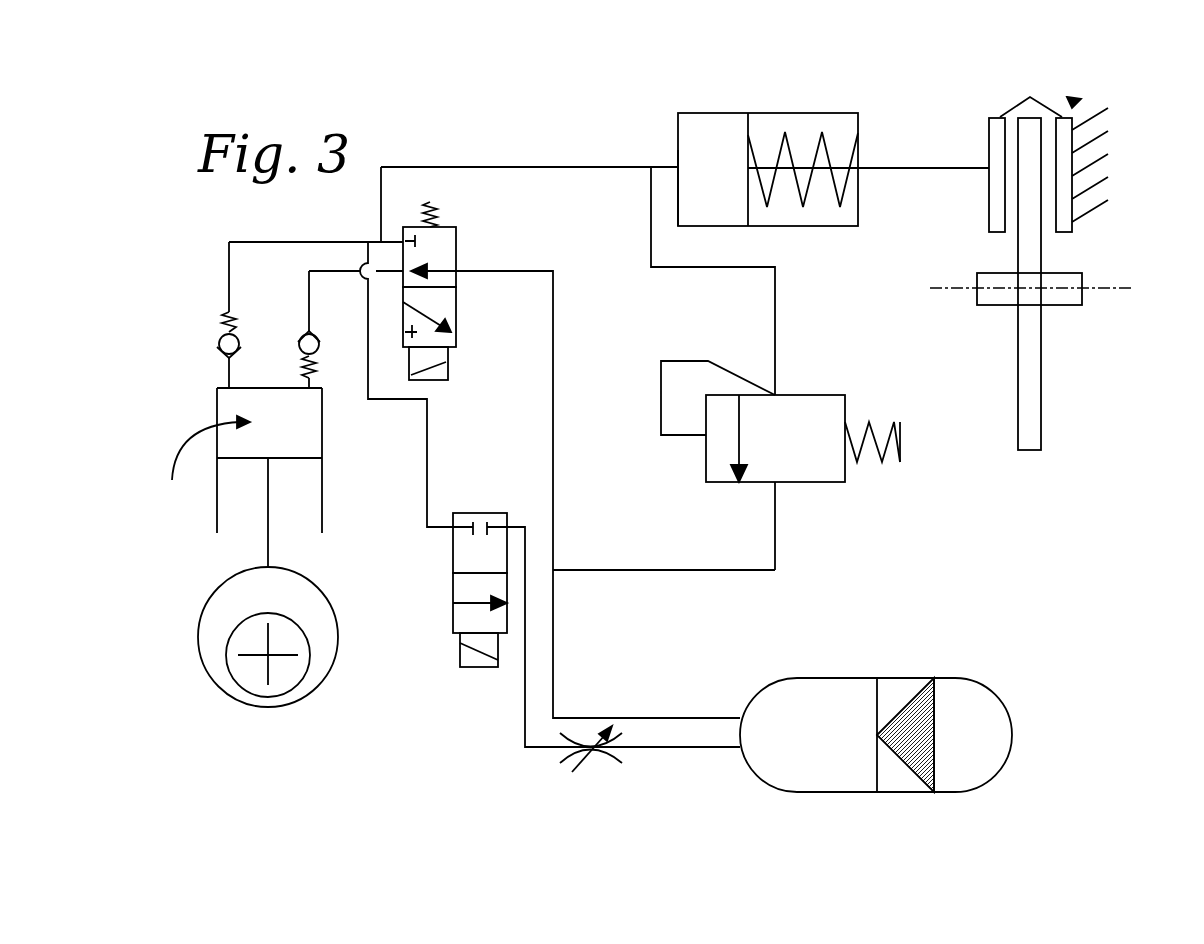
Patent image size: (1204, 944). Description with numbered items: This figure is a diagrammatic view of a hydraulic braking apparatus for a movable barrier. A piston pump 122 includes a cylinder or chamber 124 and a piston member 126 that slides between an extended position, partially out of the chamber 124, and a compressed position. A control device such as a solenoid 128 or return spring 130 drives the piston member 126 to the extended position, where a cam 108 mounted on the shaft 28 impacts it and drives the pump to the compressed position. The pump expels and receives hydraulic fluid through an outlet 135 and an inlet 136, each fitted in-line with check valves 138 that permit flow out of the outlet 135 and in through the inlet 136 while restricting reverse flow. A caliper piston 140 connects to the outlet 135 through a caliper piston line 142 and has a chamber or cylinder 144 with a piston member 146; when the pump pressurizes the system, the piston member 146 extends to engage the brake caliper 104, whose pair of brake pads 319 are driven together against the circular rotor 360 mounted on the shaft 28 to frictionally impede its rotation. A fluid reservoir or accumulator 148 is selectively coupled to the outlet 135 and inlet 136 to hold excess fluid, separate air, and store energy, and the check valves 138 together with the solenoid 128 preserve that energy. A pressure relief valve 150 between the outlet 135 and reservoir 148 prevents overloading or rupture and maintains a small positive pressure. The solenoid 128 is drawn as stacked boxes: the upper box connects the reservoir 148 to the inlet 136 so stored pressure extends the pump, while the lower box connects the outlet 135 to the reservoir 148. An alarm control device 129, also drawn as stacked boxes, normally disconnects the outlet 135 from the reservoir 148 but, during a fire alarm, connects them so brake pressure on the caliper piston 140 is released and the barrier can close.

The shaft 28 is at (270, 655).
The brake caliper 104 is at (1081, 99).
The cam 108 is at (340, 625).
The piston pump 122 is at (322, 495).
The cylinder or chamber 124 is at (201, 461).
The piston member 126 is at (250, 458).
The solenoid 128 is at (456, 245).
The alarm control device 129 is at (473, 513).
The return spring 130 is at (432, 207).
The outlet 135 is at (228, 387).
The inlet 136 is at (312, 381).
The check valves 138 is at (226, 314).
The caliper piston 140 is at (775, 113).
The caliper piston line 142 is at (677, 168).
The chamber or cylinder 144 is at (713, 162).
The piston member 146 is at (748, 208).
The fluid reservoir or accumulator 148 is at (746, 763).
The pressure relief valve 150 is at (817, 482).
The brake pads 319 is at (994, 148).
The circular rotor 360 is at (1031, 353).